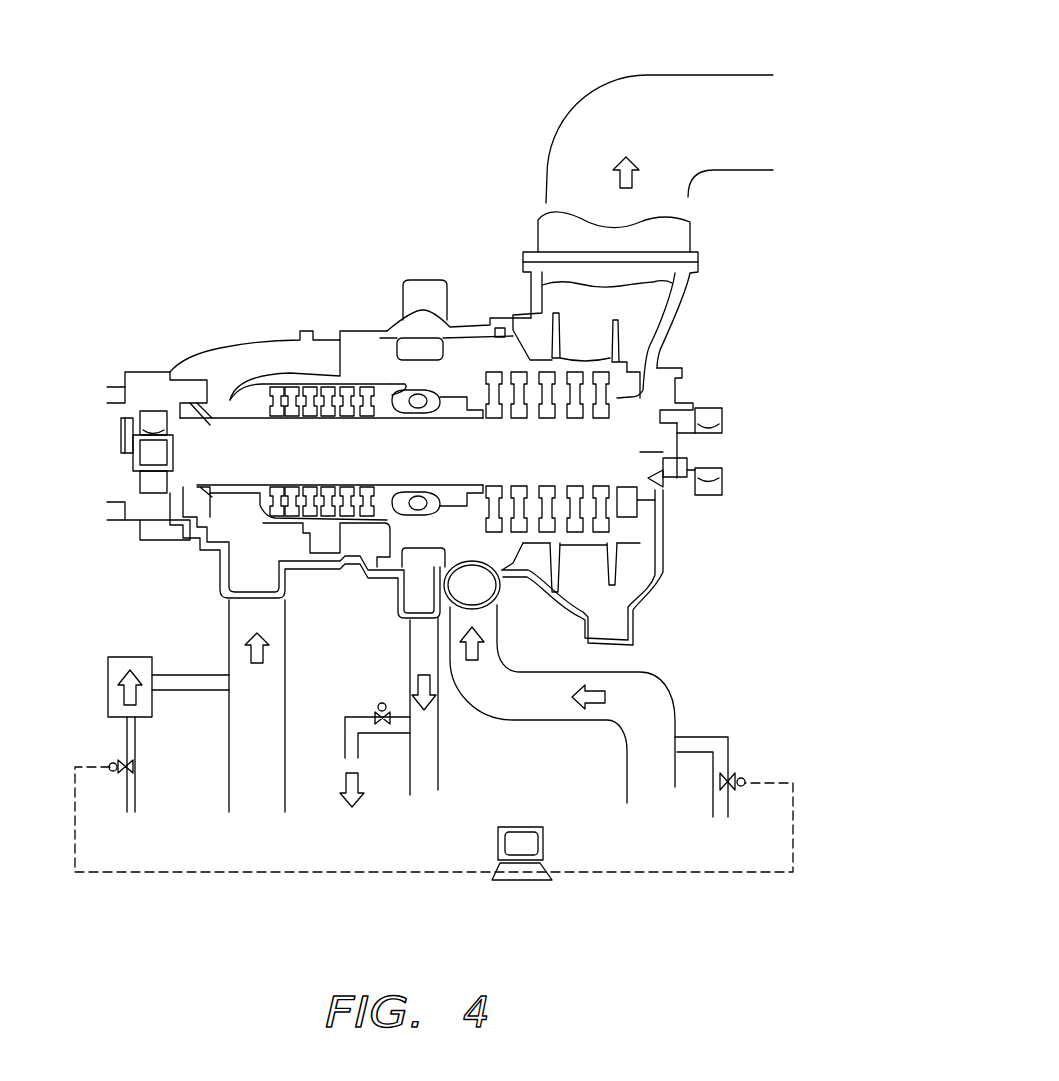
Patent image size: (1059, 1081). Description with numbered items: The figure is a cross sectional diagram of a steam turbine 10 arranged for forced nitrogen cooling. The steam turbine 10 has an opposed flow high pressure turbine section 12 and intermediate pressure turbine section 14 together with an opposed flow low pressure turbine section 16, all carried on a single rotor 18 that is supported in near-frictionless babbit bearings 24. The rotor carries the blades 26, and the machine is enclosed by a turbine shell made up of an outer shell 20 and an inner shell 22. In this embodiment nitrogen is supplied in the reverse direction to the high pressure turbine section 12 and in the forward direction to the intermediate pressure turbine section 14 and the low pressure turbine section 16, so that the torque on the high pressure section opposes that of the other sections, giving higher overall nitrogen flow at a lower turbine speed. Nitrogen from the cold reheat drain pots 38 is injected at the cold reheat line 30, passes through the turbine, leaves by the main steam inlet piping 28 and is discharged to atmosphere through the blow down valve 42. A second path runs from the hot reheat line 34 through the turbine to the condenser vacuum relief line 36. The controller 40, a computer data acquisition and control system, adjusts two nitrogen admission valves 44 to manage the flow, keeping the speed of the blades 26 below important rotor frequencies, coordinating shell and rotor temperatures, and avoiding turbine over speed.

The steam turbine 10 is at (144, 260).
The high pressure turbine section 12 is at (290, 432).
The intermediate pressure turbine section 14 is at (620, 423).
The low pressure turbine section 16 is at (663, 480).
The rotor 18 is at (657, 452).
The outer shell 20 is at (218, 365).
The inner shell 22 is at (388, 351).
The bearing 24 is at (153, 412).
The blades 26 is at (600, 428).
The main steam inlet piping 28 is at (410, 645).
The cold reheat line 30 is at (280, 665).
The hot reheat line 34 is at (640, 690).
The condenser vacuum relief line 36 is at (677, 185).
The cold reheat drain pots 38 is at (110, 668).
The controller 40 is at (527, 845).
The blow down valve 42 is at (379, 708).
The nitrogen admission valves 44 is at (112, 764).